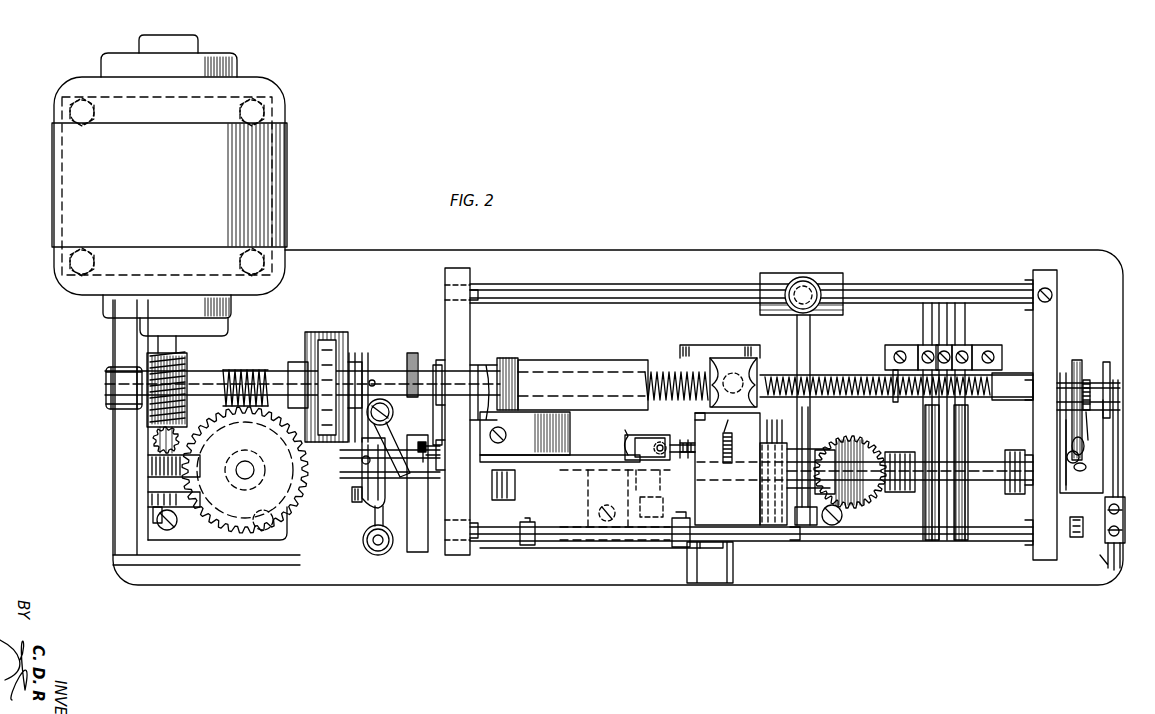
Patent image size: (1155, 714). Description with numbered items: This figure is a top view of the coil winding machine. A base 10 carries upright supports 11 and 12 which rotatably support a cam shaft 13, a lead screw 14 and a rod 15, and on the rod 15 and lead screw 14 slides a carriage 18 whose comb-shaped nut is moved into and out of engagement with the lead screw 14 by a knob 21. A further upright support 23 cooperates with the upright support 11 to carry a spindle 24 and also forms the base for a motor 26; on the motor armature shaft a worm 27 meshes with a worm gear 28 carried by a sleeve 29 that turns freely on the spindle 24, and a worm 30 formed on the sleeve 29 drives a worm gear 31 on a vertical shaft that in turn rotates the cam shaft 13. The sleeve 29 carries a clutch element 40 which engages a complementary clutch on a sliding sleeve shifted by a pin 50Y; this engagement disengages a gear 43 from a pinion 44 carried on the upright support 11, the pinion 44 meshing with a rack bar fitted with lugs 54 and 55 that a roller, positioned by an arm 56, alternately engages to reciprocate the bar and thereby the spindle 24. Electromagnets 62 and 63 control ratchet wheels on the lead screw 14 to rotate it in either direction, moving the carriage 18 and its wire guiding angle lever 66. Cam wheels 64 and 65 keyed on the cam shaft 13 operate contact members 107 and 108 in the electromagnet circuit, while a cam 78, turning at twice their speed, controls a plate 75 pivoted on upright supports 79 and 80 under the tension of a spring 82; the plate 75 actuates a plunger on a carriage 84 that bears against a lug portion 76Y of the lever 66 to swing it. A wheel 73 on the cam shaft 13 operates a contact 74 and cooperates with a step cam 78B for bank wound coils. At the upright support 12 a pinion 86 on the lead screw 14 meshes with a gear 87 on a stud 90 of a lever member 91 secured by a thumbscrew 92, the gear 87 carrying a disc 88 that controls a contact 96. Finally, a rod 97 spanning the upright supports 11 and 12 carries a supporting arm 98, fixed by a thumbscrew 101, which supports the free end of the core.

The base 10 is at (332, 578).
The upright support 11 is at (445, 310).
The upright support 12 is at (1057, 313).
The cam shaft 13 is at (1000, 468).
The lead screw 14 is at (1005, 390).
The rod 15 is at (490, 541).
The carriage 18 is at (570, 360).
The knob 21 is at (733, 358).
The upright support 23 is at (130, 498).
The spindle 24 is at (437, 365).
The motor 26 is at (262, 212).
The worm 27 is at (178, 357).
The worm gear 28 is at (155, 442).
The sleeve 29 is at (268, 368).
The worm 30 is at (245, 368).
The worm gear 31 is at (225, 520).
The clutch element 40 is at (308, 335).
The gear 43 is at (413, 353).
The pinion 44 is at (440, 446).
The pin 50Y is at (374, 370).
The lug 54 is at (410, 552).
The lug 55 is at (440, 457).
The arm 56 is at (365, 532).
The electromagnet 62 is at (360, 472).
The electromagnet 63 is at (345, 340).
The cam wheel 64 is at (880, 520).
The cam wheel 65 is at (965, 530).
The angle lever 66 is at (560, 462).
The wheel 73 is at (932, 530).
The contact 74 is at (944, 322).
The plate 75 is at (750, 515).
The lug portion 76Y is at (635, 445).
The cam 78 is at (660, 442).
The cam 78B is at (770, 420).
The upright support 79 is at (612, 522).
The upright support 80 is at (808, 440).
The spring 82 is at (795, 540).
The carriage 84 is at (628, 436).
The pinion 86 is at (1075, 360).
The gear 87 is at (1087, 380).
The disc 88 is at (1106, 362).
The stud 90 is at (1084, 440).
The lever member 91 is at (1068, 483).
The thumbscrew 92 is at (1079, 457).
The contact 96 is at (1086, 467).
The rod 97 is at (520, 284).
The supporting arm 98 is at (810, 335).
The thumbscrew 101 is at (808, 285).
The contact member 107 is at (925, 320).
The contact member 108 is at (962, 320).